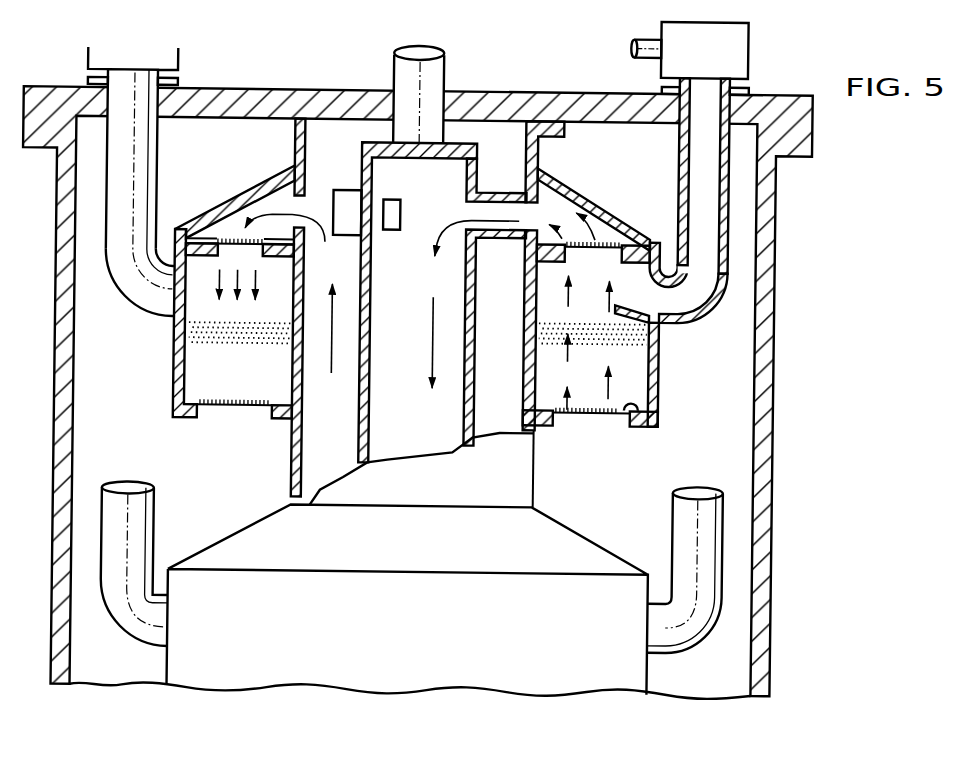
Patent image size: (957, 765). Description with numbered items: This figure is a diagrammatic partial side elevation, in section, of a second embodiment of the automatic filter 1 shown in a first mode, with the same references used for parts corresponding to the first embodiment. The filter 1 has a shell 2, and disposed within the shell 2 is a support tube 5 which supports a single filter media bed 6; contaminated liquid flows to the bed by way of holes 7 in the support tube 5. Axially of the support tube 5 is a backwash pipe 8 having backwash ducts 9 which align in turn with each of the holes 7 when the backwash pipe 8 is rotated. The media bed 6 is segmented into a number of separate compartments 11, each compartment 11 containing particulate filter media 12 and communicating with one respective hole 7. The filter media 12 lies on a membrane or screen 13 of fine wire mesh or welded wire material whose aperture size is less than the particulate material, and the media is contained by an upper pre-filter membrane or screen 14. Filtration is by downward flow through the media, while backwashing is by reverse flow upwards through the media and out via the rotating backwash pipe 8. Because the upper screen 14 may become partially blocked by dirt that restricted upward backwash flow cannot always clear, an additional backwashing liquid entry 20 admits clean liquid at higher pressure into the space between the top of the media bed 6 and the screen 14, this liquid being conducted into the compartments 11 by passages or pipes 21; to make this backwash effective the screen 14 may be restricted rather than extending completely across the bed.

The automatic filter 1 is at (251, 194).
The shell 2 is at (764, 533).
The support tube 5 is at (536, 154).
The filter media bed 6 is at (618, 373).
The holes 7 is at (531, 216).
The backwash pipe 8 is at (473, 412).
The backwash ducts 9 is at (497, 190).
The compartments 11 is at (658, 368).
The particulate filter media 12 is at (648, 335).
The membrane or screen 13 is at (637, 413).
The upper pre-filter membrane or screen 14 is at (611, 236).
The additional backwashing liquid entry 20 is at (635, 291).
The passages or pipes 21 is at (725, 231).